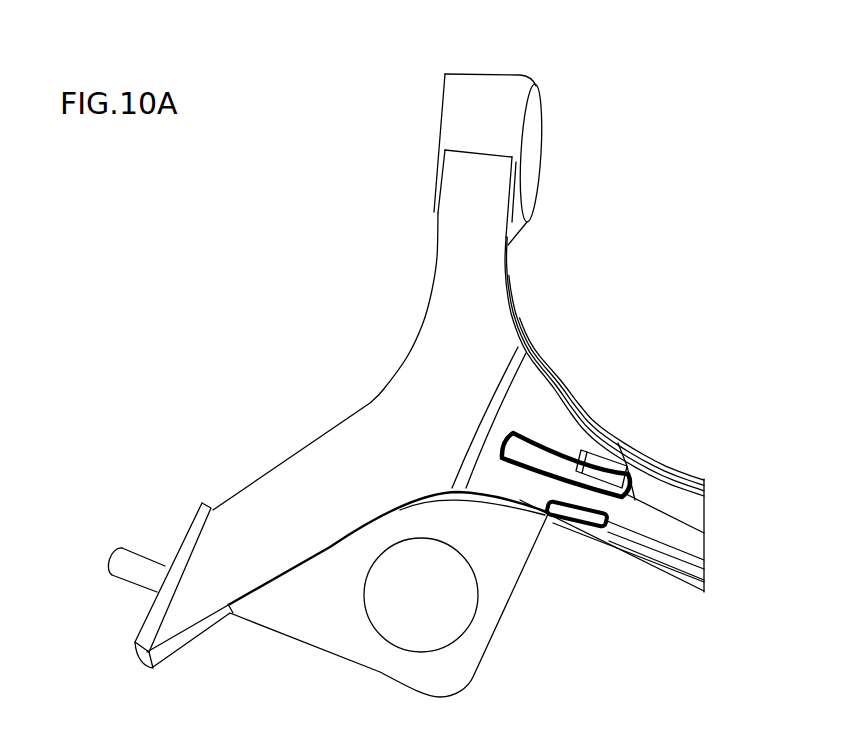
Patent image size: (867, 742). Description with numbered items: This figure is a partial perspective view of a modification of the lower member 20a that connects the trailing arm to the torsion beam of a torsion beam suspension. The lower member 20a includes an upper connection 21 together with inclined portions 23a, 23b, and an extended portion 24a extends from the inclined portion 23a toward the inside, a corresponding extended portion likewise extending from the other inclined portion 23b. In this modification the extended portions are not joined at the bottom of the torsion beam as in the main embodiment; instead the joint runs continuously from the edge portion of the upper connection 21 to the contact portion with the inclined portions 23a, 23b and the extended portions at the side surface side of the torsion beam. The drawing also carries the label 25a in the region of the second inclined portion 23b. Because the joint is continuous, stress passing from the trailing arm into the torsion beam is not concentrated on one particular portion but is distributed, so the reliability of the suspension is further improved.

The lower member 20a is at (528, 330).
The upper connection 21 is at (513, 296).
The inclined portion 23a is at (562, 398).
The extended portion 24a is at (613, 437).
The inclined portion 23b is at (543, 523).
The second engaging portion 25a is at (597, 546).